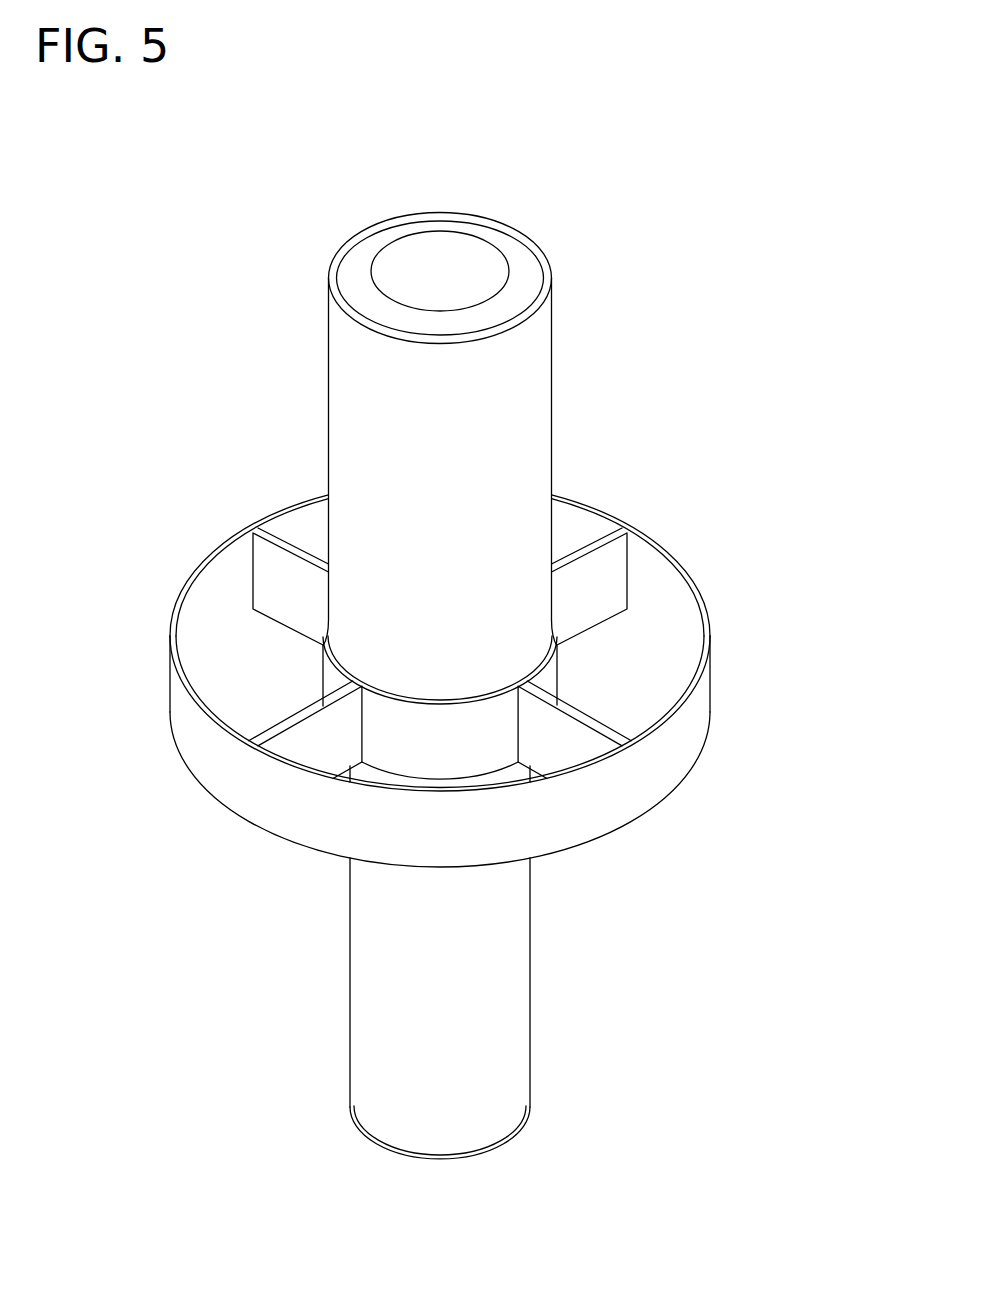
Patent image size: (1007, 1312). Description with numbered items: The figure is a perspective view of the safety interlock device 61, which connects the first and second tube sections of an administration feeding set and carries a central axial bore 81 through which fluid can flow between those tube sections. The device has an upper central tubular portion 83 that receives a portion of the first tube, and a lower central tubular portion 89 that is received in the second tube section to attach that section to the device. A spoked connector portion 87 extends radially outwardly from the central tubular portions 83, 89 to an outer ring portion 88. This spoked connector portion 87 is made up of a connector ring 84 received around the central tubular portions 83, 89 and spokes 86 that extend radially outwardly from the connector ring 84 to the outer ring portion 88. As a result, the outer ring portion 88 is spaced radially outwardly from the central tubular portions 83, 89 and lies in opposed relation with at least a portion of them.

The safety interlock device 61 is at (201, 258).
The central axial bore 81 is at (447, 278).
The upper central tubular portion 83 is at (522, 395).
The connector ring 84 is at (468, 750).
The spokes 86 is at (288, 581).
The spoked connector portion 87 is at (374, 750).
The outer ring portion 88 is at (210, 752).
The lower central tubular portion 89 is at (478, 1003).